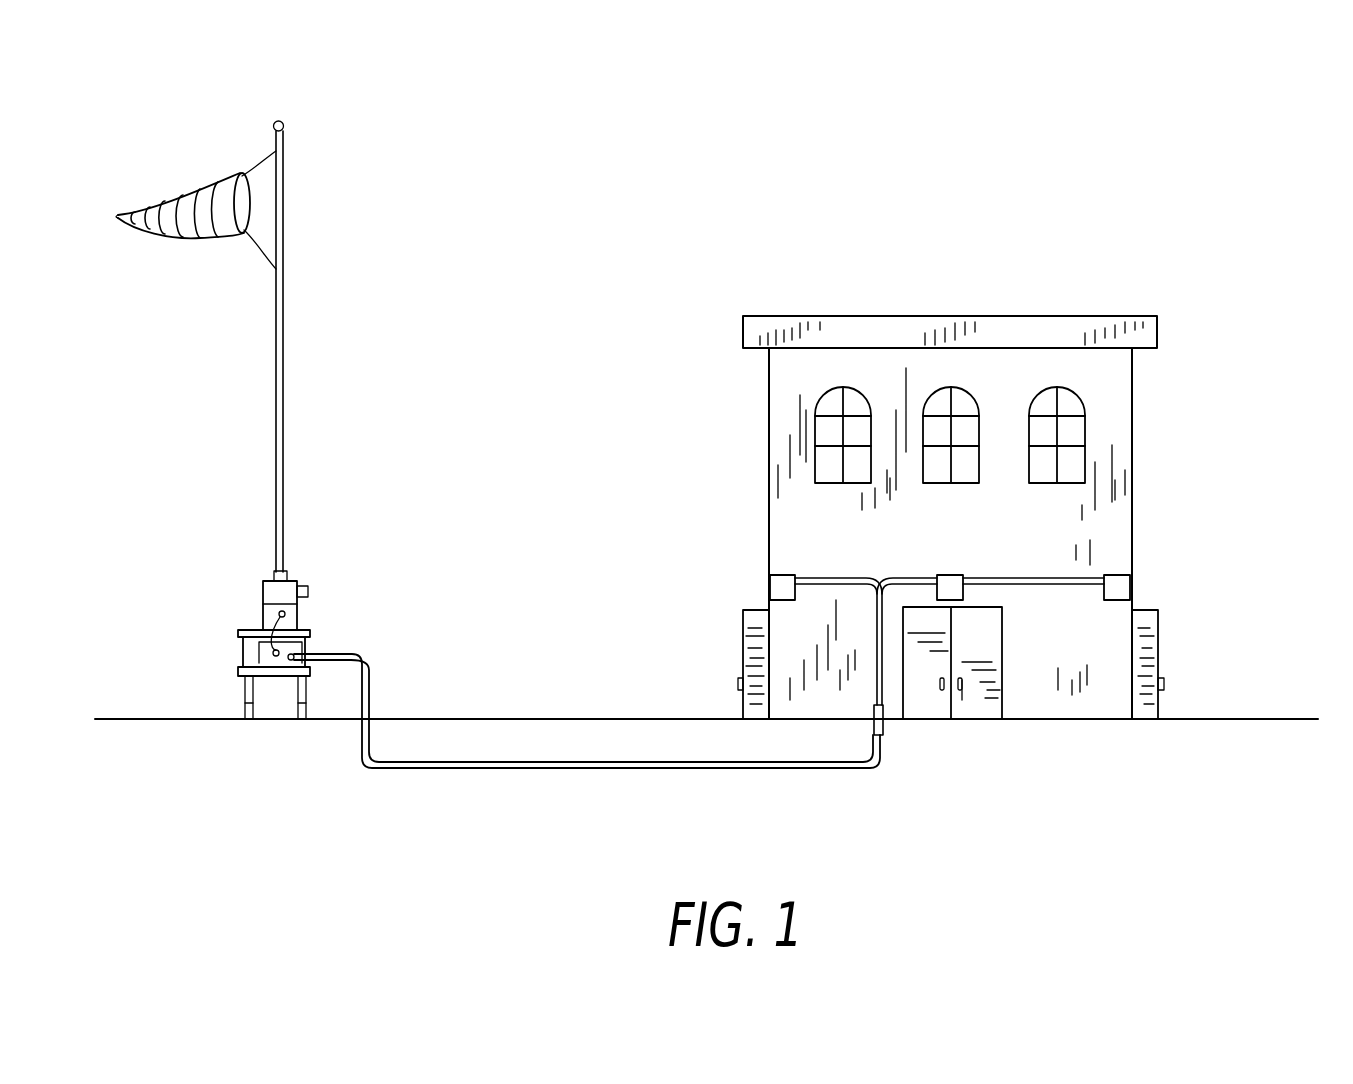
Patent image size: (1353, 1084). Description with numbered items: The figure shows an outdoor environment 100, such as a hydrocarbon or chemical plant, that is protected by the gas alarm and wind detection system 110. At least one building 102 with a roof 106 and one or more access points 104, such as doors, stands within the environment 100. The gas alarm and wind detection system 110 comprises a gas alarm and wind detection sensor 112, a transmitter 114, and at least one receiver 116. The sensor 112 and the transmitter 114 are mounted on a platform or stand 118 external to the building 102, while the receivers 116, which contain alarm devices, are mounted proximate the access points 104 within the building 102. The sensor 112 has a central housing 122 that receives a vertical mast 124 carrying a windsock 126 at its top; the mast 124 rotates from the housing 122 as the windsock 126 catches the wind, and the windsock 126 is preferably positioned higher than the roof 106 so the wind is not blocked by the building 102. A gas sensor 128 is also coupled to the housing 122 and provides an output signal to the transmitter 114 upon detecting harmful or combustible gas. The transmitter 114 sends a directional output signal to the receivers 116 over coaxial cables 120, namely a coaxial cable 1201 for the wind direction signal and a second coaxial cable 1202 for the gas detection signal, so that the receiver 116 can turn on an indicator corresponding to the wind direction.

The outdoor environment 100 is at (1165, 103).
The building 102 is at (1133, 380).
The access points 104 is at (742, 650).
The roof 106 is at (1143, 320).
The gas alarm and wind detection system 110 is at (203, 453).
The gas alarm and wind detection sensor 112 is at (263, 606).
The transmitter 114 is at (243, 656).
The receiver 116 is at (940, 575).
The platform or stand 118 is at (244, 690).
The coaxial cables 120 is at (588, 684).
The coaxial cable 1201 is at (369, 674).
The second coaxial cable 1202 is at (370, 697).
The central housing 122 is at (268, 578).
The vertical mast 124 is at (284, 330).
The windsock 126 is at (164, 200).
The gas sensor 128 is at (310, 592).